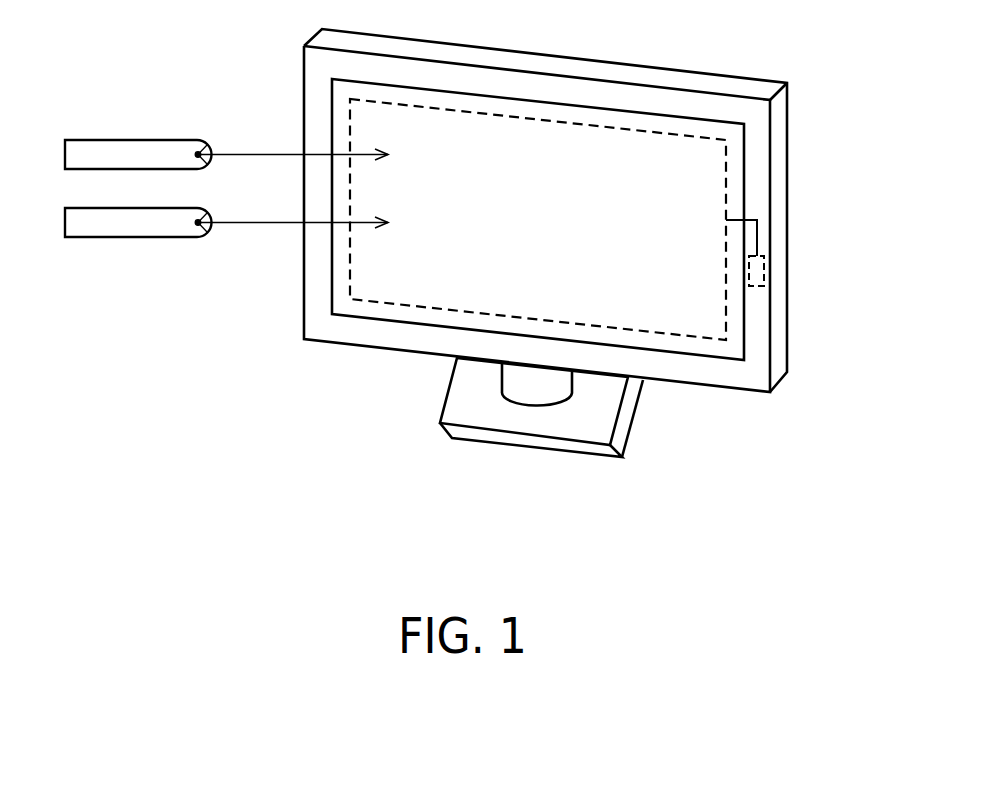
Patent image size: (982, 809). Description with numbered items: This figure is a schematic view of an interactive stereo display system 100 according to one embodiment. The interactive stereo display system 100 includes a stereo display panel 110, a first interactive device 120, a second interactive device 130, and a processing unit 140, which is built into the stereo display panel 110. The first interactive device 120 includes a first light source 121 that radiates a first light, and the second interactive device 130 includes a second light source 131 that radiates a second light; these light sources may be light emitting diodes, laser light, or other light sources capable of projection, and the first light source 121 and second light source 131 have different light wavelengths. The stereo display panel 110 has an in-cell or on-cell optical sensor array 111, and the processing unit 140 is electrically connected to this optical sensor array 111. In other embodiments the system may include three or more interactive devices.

The interactive stereo display system 100 is at (845, 515).
The stereo display panel 110 is at (743, 88).
The optical sensor array 111 is at (727, 186).
The first interactive device 120 is at (98, 153).
The first light source 121 is at (209, 139).
The second interactive device 130 is at (103, 227).
The second light source 131 is at (210, 236).
The processing unit 140 is at (764, 270).